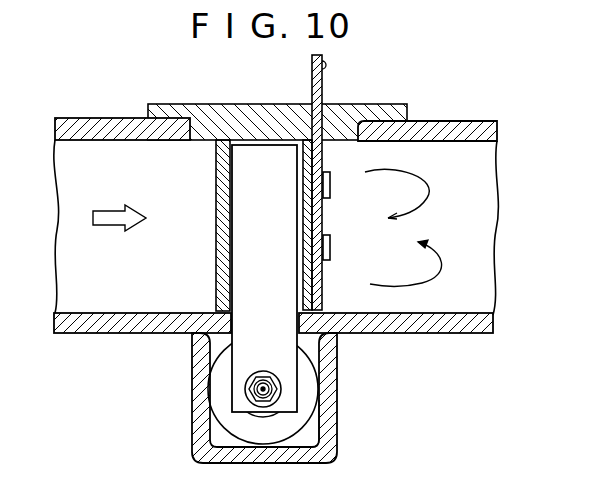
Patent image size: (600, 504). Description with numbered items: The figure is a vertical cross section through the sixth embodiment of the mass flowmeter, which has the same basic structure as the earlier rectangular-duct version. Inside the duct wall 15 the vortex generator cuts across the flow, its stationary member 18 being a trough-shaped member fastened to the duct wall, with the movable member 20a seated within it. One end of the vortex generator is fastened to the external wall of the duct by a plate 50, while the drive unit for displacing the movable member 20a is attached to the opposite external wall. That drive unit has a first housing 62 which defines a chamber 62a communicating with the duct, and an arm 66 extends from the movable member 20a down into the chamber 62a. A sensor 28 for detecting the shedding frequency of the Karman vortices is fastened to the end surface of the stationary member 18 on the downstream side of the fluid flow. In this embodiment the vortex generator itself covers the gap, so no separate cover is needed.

The plate 50 is at (225, 106).
The movable member 20a is at (232, 208).
The stationary member 18 is at (216, 247).
The duct wall 15 is at (219, 317).
The sensor 28 is at (324, 215).
The arm 66 is at (267, 294).
The first housing 62 is at (192, 427).
The chamber 62a is at (310, 432).